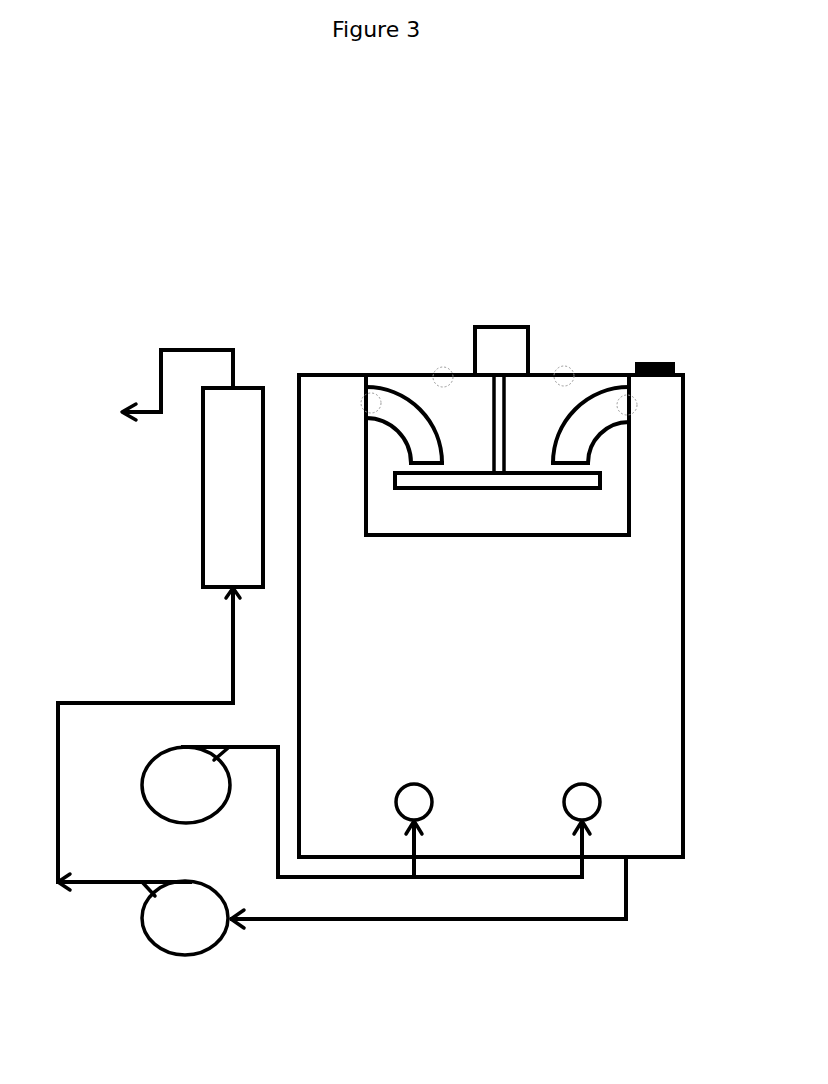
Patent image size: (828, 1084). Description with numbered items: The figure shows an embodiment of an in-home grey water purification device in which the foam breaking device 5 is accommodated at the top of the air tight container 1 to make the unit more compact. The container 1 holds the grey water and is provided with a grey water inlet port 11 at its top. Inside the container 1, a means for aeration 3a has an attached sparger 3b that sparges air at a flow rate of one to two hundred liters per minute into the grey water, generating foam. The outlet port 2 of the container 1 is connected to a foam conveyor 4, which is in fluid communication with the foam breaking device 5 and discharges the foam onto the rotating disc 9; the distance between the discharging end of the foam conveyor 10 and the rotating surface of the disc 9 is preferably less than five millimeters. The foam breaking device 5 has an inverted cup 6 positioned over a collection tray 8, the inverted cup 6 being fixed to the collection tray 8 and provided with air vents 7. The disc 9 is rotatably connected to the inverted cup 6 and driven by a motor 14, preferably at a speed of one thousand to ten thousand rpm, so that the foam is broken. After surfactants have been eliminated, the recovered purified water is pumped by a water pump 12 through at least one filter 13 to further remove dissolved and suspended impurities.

The air tight container 1 is at (491, 616).
The outlet port 2 is at (492, 412).
The means for aeration 3a is at (278, 812).
The sparger 3b is at (497, 828).
The foam conveyor 4 is at (497, 425).
The foam breaking device 5 is at (468, 424).
The inverted cup 6 is at (497, 360).
The air vents 7 is at (503, 359).
The collection tray 8 is at (497, 457).
The disc 9 is at (497, 431).
The discharging end of the foam conveyor 10 is at (562, 465).
The grey water inlet port 11 is at (656, 352).
The water pump 12 is at (342, 906).
The filter 13 is at (160, 620).
The motor 14 is at (501, 333).